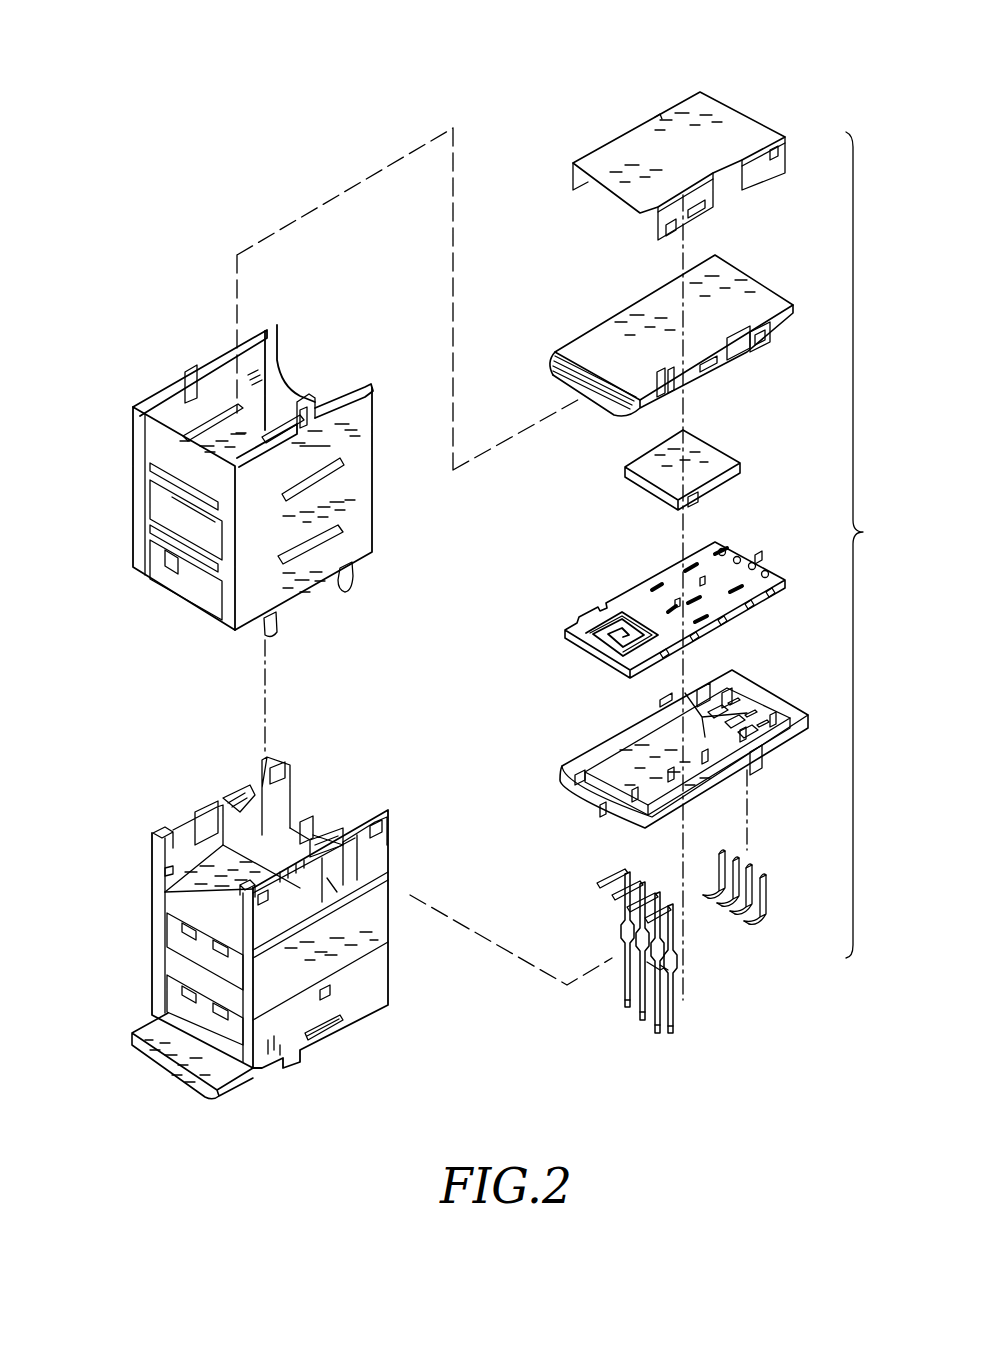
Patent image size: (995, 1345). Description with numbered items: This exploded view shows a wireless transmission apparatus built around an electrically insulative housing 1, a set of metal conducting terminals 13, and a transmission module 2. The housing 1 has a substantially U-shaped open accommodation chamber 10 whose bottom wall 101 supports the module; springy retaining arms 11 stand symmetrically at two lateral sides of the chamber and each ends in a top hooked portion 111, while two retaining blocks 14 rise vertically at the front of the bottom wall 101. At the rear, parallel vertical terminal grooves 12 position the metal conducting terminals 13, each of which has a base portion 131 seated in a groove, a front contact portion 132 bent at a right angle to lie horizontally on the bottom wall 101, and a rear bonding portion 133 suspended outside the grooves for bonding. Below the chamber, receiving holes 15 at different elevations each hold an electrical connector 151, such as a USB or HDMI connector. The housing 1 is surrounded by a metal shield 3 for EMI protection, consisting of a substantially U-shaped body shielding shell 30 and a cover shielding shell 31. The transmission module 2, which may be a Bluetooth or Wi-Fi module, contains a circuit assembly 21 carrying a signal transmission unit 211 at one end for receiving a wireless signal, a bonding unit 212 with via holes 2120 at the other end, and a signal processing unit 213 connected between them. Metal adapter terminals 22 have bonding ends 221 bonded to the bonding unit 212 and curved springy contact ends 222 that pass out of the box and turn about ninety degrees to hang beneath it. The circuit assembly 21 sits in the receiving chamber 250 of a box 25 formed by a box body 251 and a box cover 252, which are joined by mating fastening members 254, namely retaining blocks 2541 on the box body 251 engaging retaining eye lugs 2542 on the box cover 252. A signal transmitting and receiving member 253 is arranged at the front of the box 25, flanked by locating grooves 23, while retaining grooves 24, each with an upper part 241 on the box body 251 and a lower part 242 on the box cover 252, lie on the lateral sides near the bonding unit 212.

The electrically insulative housing 1 is at (378, 933).
The accommodation chamber 10 is at (202, 862).
The bottom wall 101 is at (210, 895).
The springy retaining arms 11 is at (333, 837).
The top hooked portion 111 is at (248, 810).
The terminal grooves 12 is at (307, 830).
The metal conducting terminals 13 is at (672, 1010).
The base portion 131 is at (625, 905).
The front contact portion 132 is at (597, 883).
The rear bonding portion 133 is at (637, 1010).
The retaining blocks 14 is at (165, 870).
The receiving holes 15 is at (242, 1050).
The electrical connector 151 is at (190, 1003).
The transmission module 2 is at (650, 602).
The circuit assembly 21 is at (632, 608).
The signal transmission unit 211 is at (590, 630).
The bonding unit 212 is at (743, 553).
The via holes 2120 is at (757, 565).
The signal processing unit 213 is at (660, 587).
The metal adapter terminals 22 is at (760, 930).
The bonding end 221 is at (718, 862).
The springy contact end 222 is at (748, 917).
The locating grooves 23 is at (658, 383).
The retaining grooves 24 is at (788, 224).
The upper part 241 is at (757, 760).
The lower part 242 is at (737, 340).
The box 25 is at (518, 288).
The receiving chamber 250 is at (641, 756).
The box body 251 is at (570, 773).
The box cover 252 is at (627, 327).
The signal transmitting and receiving member 253 is at (572, 368).
The mating fastening members 254 is at (776, 424).
The retaining blocks 2541 is at (582, 775).
The retaining eye lugs 2542 is at (763, 347).
The metal shield 3 is at (142, 517).
The body shielding shell 30 is at (132, 432).
The cover shielding shell 31 is at (627, 160).